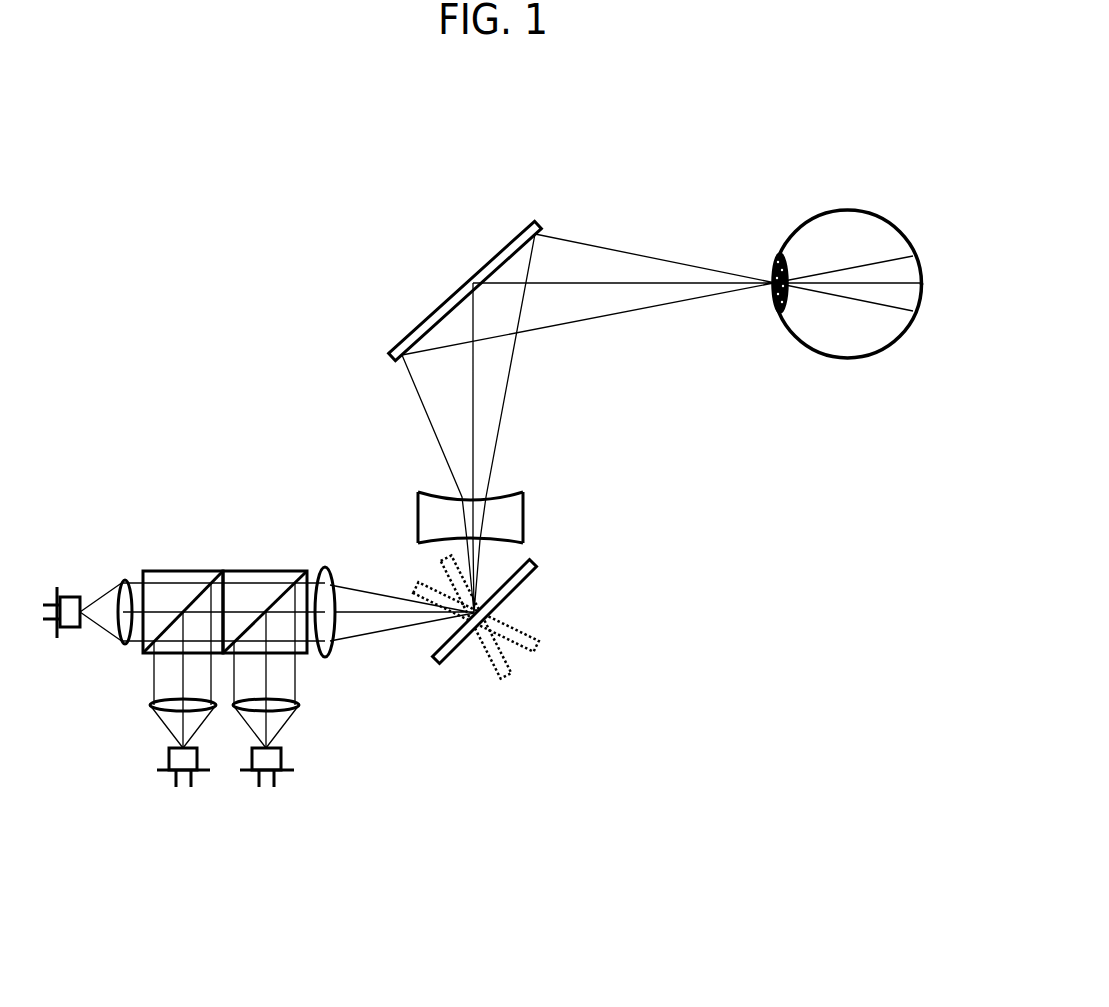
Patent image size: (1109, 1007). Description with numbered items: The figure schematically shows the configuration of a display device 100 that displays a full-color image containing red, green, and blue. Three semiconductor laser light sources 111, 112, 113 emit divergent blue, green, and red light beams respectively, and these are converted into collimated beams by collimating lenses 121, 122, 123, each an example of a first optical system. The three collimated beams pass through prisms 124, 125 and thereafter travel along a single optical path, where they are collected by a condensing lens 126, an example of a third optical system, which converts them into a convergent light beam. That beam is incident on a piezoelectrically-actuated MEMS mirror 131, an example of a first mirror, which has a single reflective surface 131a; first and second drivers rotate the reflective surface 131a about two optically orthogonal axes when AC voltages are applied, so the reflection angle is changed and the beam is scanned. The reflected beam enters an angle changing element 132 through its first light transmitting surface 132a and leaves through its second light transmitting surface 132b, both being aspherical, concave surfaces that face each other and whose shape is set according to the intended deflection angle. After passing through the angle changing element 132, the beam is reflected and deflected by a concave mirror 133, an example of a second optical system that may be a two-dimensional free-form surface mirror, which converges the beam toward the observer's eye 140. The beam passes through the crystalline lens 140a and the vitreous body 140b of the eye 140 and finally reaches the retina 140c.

The display device 100 is at (247, 243).
The light source 111 is at (72, 628).
The light source 112 is at (168, 773).
The light source 113 is at (247, 773).
The collimating lens 121 is at (122, 578).
The collimating lens 122 is at (152, 707).
The collimating lens 123 is at (300, 707).
The prism 124 is at (200, 570).
The prism 125 is at (278, 570).
The condensing lens 126 is at (323, 655).
The MEMS mirror 131 is at (435, 658).
The reflective surface 131a is at (525, 557).
The angle changing element 132 is at (418, 504).
The first light transmitting surface 132a is at (452, 543).
The second light transmitting surface 132b is at (443, 493).
The concave mirror 133 is at (400, 338).
The eye 140 is at (837, 293).
The crystalline lens 140a is at (775, 307).
The vitreous body 140b is at (848, 347).
The retina 140c is at (915, 310).